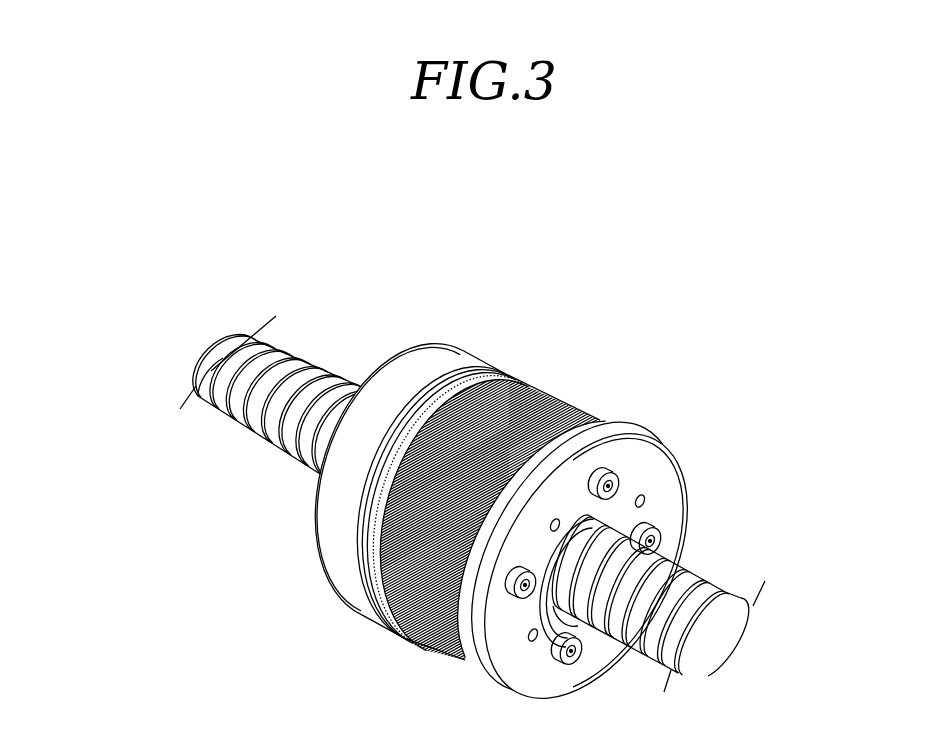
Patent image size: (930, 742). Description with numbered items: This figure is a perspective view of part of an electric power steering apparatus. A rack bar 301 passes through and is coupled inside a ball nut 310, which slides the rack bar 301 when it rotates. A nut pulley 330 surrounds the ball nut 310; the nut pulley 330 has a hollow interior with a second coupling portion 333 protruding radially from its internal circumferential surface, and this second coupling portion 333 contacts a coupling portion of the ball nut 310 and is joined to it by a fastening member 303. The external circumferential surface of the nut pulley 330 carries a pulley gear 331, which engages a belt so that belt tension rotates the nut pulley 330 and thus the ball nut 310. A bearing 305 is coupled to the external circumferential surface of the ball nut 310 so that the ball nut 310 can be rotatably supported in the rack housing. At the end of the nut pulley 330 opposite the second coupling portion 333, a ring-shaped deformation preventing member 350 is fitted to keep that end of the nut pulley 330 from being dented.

The rack bar 301 is at (727, 592).
The fastening member 303 is at (610, 470).
The bearing 305 is at (468, 358).
The ball nut 310 is at (568, 650).
The nut pulley 330 is at (583, 423).
The pulley gear 331 is at (553, 388).
The second coupling portion 333 is at (640, 483).
The deformation preventing member 350 is at (505, 362).